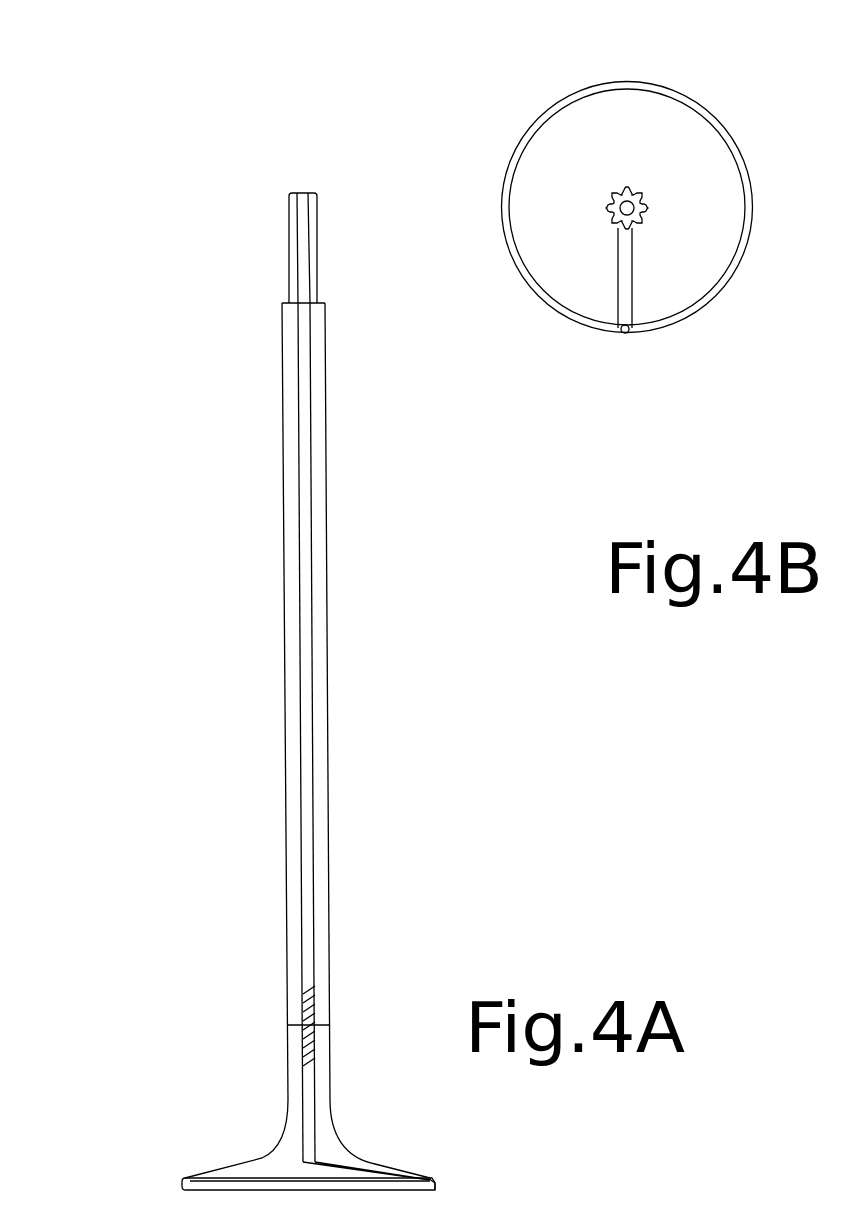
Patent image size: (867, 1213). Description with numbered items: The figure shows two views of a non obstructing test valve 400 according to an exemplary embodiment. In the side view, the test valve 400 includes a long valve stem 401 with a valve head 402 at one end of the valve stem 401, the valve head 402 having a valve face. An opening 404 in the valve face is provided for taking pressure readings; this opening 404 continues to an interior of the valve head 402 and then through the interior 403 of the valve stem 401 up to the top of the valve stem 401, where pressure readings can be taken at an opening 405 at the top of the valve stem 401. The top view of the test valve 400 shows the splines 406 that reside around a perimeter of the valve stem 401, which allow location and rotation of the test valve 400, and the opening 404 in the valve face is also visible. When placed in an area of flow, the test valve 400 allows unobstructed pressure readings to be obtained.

In FIG. 4A, the test valve 400 is at (290, 797).
In FIG. 4B, the test valve 400 is at (545, 218).
In FIG. 4A, the valve stem 401 is at (278, 500).
In FIG. 4A, the valve head 402 is at (220, 1160).
In FIG. 4A, the interior of the valve stem 403 is at (307, 1162).
In FIG. 4A, the opening 404 is at (433, 1182).
In FIG. 4B, the opening 404 is at (627, 333).
In FIG. 4A, the opening 405 is at (300, 200).
In FIG. 4B, the splines 406 is at (613, 223).